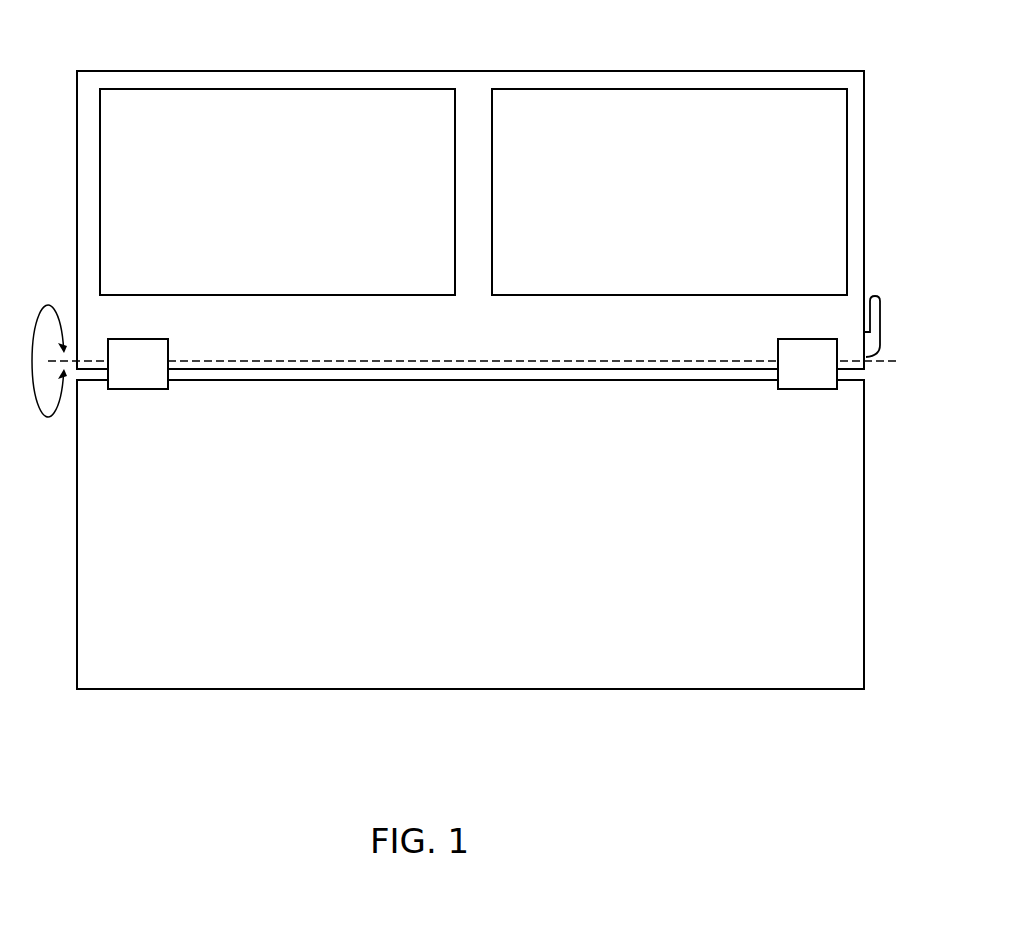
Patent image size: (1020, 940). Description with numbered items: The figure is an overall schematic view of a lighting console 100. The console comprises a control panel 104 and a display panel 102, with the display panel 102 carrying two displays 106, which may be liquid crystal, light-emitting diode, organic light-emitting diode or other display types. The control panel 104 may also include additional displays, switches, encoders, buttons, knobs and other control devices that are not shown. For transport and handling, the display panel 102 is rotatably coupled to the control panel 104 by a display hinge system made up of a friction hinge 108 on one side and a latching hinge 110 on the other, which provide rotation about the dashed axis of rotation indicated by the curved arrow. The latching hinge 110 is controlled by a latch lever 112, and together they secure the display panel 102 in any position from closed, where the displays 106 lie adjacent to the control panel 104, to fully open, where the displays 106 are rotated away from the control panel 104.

The lighting console 100 is at (238, 740).
The display panel 102 is at (468, 88).
The control panel 104 is at (468, 675).
The displays 106 is at (148, 108).
The friction hinge 108 is at (138, 378).
The latching hinge 110 is at (808, 380).
The latch lever 112 is at (880, 333).